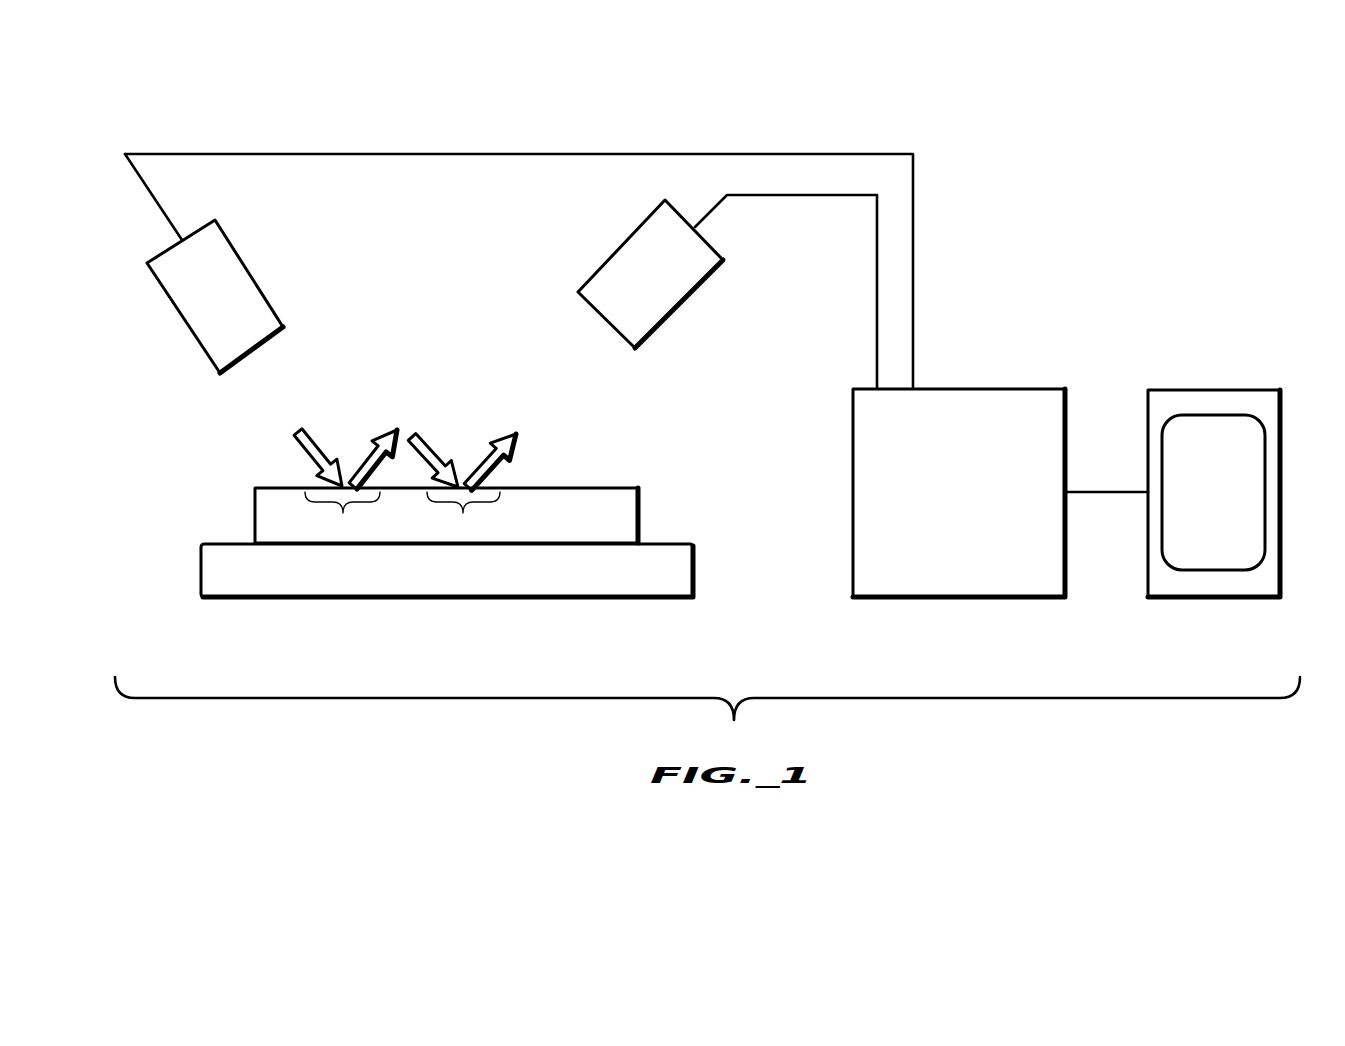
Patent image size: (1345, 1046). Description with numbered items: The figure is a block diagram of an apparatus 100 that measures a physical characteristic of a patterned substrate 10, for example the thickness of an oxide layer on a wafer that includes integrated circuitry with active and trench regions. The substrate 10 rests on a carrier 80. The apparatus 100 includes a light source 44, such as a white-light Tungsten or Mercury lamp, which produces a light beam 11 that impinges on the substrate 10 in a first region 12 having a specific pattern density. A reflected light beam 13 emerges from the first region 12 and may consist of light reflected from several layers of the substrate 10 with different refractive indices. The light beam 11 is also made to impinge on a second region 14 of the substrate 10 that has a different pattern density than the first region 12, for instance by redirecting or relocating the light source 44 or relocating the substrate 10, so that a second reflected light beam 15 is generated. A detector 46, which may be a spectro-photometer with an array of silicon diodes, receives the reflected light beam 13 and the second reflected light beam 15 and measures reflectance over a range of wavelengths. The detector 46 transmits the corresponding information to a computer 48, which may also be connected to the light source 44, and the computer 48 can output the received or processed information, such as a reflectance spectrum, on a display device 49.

The apparatus 100 is at (1152, 164).
The patterned substrate 10 is at (255, 517).
The light beam 11 is at (305, 458).
The first region 12 is at (343, 513).
The reflected light beam 13 is at (383, 430).
The second region 14 is at (463, 513).
The second reflected light beam 15 is at (515, 452).
The light source 44 is at (257, 277).
The detector 46 is at (630, 233).
The computer 48 is at (1018, 388).
The display device 49 is at (1233, 387).
The carrier 80 is at (695, 570).